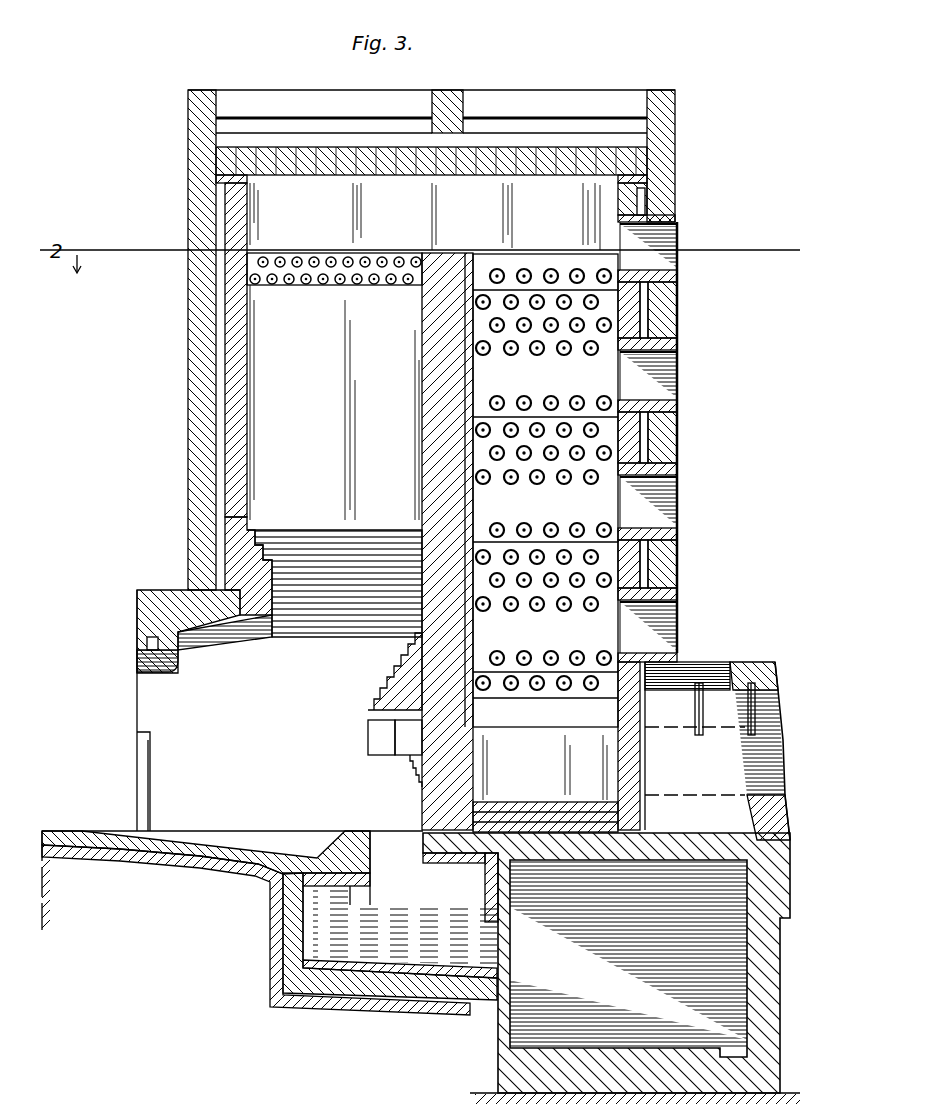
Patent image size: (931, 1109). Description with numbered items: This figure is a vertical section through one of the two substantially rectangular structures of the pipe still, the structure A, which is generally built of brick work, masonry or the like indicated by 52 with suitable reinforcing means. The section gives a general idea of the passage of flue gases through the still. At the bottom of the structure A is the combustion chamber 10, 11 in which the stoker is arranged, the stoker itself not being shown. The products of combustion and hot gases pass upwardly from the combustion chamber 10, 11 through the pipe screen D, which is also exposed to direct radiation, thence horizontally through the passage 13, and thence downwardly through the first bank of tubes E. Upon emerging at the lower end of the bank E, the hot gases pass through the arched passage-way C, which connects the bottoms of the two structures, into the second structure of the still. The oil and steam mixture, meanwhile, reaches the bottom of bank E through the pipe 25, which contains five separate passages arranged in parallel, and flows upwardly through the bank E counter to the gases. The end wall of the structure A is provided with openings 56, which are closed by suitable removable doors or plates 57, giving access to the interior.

The rectangular structure A is at (503, 92).
The arched passage-way C is at (750, 667).
The pipe screen D is at (323, 260).
The first bank of tubes E is at (584, 318).
The combustion chamber 10 is at (283, 728).
The combustion chamber 11 is at (268, 388).
The passage 13 is at (450, 222).
The pipe 25 is at (680, 687).
The brick work 52 is at (657, 178).
The opening 56 is at (674, 236).
The removable door 57 is at (677, 256).